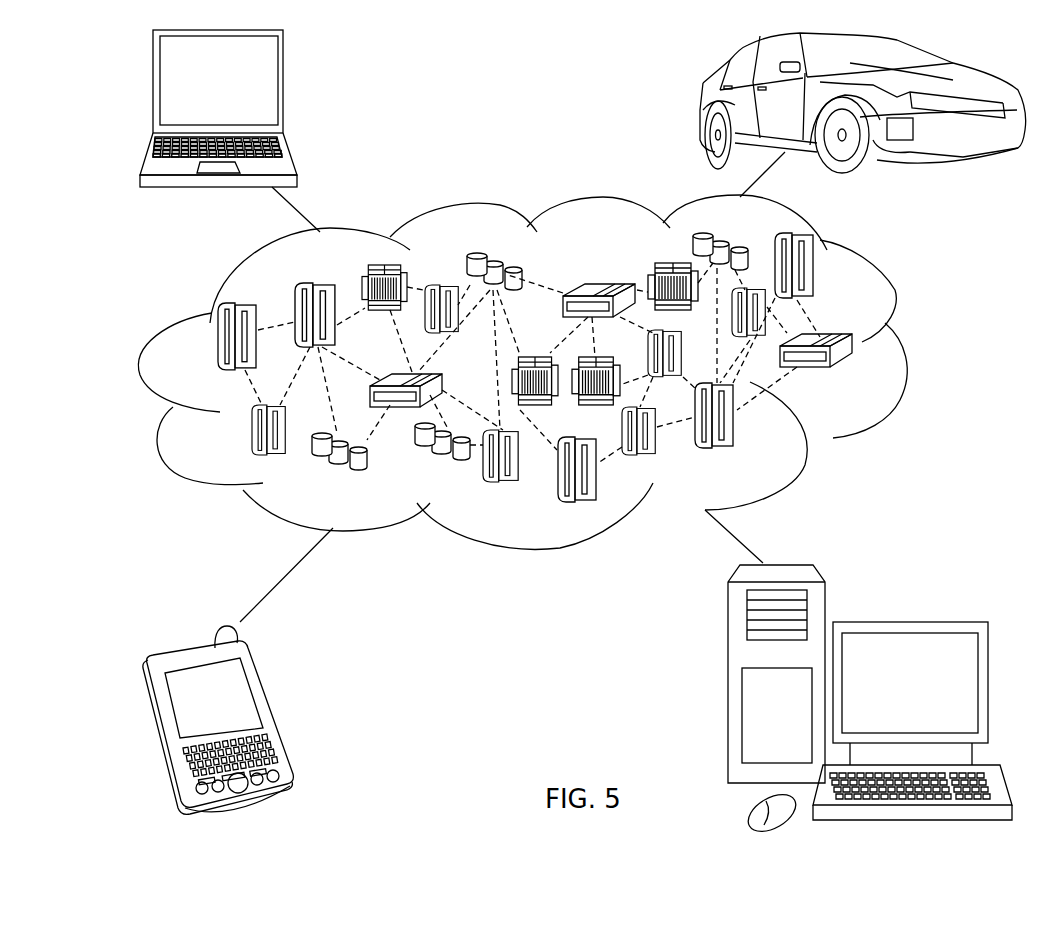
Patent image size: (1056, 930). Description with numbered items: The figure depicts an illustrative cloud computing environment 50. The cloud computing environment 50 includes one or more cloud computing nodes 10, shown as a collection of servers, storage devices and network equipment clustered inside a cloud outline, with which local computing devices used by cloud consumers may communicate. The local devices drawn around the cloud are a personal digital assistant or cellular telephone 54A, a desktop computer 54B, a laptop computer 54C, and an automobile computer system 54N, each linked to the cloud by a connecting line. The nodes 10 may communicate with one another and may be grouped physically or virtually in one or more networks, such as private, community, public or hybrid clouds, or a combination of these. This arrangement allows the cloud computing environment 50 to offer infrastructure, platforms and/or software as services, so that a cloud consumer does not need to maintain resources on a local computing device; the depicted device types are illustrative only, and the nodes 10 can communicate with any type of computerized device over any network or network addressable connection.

The cloud computing node 10 is at (852, 376).
The cloud computing environment 50 is at (908, 348).
The personal digital assistant or cellular telephone 54A is at (275, 712).
The desktop computer 54B is at (907, 622).
The laptop computer 54C is at (285, 88).
The automobile computer system 54N is at (700, 102).